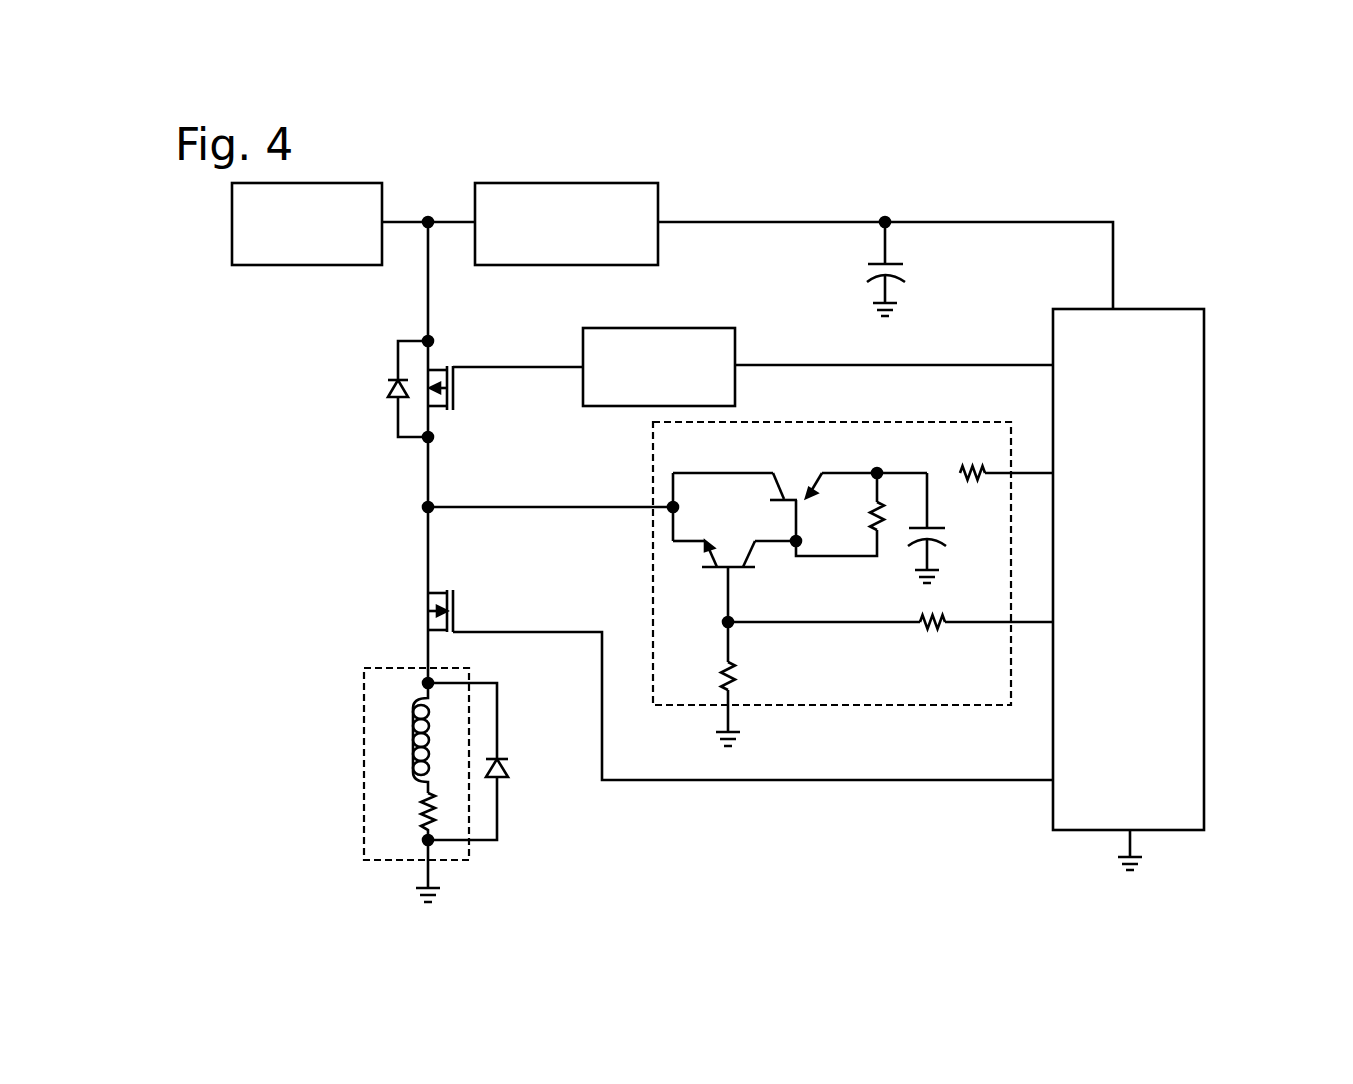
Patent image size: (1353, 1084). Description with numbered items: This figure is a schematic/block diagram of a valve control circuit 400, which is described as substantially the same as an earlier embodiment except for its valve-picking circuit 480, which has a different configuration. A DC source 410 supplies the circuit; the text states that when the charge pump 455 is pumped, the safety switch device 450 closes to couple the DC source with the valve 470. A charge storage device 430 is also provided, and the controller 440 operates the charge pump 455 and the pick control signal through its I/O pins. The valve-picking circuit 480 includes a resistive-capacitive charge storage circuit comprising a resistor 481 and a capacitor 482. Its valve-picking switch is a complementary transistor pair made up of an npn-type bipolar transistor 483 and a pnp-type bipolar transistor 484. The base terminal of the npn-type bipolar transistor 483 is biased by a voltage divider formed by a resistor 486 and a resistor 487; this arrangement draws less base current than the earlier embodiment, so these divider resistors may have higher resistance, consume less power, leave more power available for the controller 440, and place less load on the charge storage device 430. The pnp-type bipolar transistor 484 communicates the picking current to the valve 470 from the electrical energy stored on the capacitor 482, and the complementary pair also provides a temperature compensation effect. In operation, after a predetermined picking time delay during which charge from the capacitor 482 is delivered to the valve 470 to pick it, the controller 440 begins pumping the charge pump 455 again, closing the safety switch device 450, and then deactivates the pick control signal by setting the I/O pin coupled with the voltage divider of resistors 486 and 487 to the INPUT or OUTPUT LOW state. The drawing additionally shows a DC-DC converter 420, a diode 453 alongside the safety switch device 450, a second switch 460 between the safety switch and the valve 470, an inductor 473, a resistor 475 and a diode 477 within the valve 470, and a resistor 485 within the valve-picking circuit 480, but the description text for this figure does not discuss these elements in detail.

The valve control circuit 400 is at (1058, 172).
The DC source 410 is at (323, 183).
The DC-DC converter 420 is at (596, 183).
The charge storage device 430 is at (890, 264).
The controller 440 is at (1142, 309).
The safety switch device 450 is at (458, 392).
The diode 453 is at (386, 393).
The charge pump 455 is at (672, 328).
The MOSFET switch 460 is at (457, 610).
The valve 470 is at (342, 717).
The inductor 473 is at (413, 745).
The resistor 475 is at (425, 806).
The diode 477 is at (510, 768).
The valve-picking circuit 480 is at (637, 543).
The resistor 481 is at (977, 468).
The capacitor 482 is at (938, 530).
The npn-type bipolar transistor 483 is at (733, 571).
The pnp-type bipolar transistor 484 is at (772, 502).
The resistor 485 is at (870, 505).
The resistor 486 is at (934, 631).
The resistor 487 is at (742, 680).